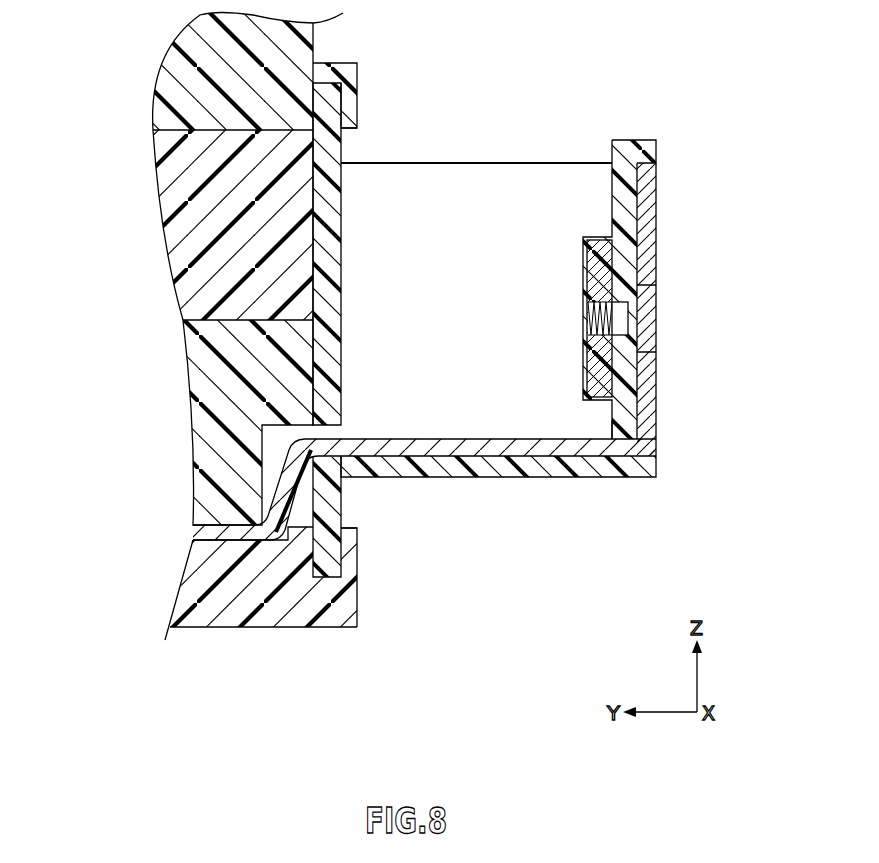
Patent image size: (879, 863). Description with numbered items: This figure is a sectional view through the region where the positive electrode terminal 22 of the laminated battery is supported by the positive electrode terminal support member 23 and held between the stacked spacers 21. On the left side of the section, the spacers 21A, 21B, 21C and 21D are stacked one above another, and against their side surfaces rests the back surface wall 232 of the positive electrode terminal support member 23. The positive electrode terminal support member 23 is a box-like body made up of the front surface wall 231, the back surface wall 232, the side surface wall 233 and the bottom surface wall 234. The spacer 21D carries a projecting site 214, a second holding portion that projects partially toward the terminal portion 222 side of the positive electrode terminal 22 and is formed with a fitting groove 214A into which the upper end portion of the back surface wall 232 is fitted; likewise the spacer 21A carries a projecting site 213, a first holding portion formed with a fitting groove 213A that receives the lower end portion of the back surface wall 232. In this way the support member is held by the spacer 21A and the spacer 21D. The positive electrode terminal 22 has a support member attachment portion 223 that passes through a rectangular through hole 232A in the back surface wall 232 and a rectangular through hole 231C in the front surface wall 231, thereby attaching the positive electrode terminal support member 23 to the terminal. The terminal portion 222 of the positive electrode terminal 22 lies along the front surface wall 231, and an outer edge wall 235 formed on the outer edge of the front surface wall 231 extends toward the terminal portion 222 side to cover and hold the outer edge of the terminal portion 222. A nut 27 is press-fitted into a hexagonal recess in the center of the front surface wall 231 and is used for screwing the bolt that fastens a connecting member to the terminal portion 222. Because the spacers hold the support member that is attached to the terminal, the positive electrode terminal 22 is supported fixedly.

The spacer 21 is at (243, 327).
The spacer 21A is at (253, 566).
The spacer 21B is at (210, 435).
The spacer 21C is at (175, 218).
The spacer 21D is at (243, 77).
The site 213 is at (390, 560).
The fitting groove 213A is at (342, 520).
The site 214 is at (352, 72).
The fitting groove 214A is at (342, 140).
The positive electrode terminal 22 is at (481, 351).
The terminal portion 222 is at (648, 203).
The support member attachment portion 223 is at (500, 447).
The positive electrode terminal support member 23 is at (512, 330).
The front surface wall 231 is at (597, 263).
The through hole 231C is at (612, 433).
The back surface wall 232 is at (340, 198).
The through hole 232A is at (340, 438).
The side surface wall 233 is at (519, 163).
The bottom surface wall 234 is at (608, 477).
The outer edge wall 235 is at (648, 147).
The nut 27 is at (592, 280).